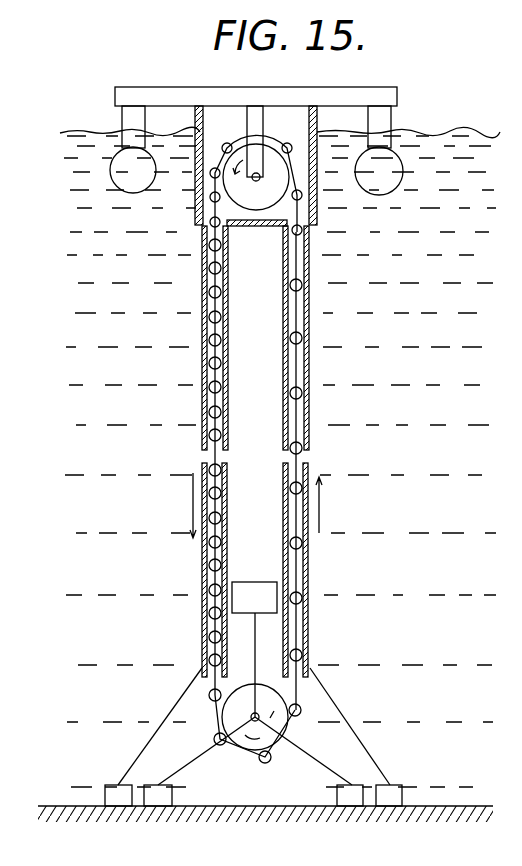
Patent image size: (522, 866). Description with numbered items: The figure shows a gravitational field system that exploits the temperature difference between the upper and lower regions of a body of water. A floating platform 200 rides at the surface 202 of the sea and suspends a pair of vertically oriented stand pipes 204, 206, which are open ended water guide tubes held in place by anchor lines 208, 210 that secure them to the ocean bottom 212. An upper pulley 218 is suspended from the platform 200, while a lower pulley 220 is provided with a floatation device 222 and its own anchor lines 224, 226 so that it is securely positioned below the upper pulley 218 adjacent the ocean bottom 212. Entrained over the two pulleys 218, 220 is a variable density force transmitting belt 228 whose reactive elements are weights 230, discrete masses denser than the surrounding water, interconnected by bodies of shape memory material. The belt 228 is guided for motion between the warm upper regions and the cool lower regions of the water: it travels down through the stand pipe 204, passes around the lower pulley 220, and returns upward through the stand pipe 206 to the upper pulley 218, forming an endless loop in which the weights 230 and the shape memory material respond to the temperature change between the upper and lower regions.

The floating platform 200 is at (172, 91).
The surface of the sea 202 is at (92, 129).
The stand pipe 204 is at (205, 350).
The stand pipe 206 is at (311, 362).
The anchor line 208 is at (178, 705).
The anchor line 210 is at (336, 705).
The ocean bottom 212 is at (74, 805).
The pulley 218 is at (276, 199).
The lower pulley 220 is at (250, 750).
The floatation device 222 is at (275, 563).
The anchor line 224 is at (207, 757).
The anchor line 226 is at (303, 751).
The variable density force transmitting belt 228 is at (207, 215).
The weights 230 is at (209, 413).